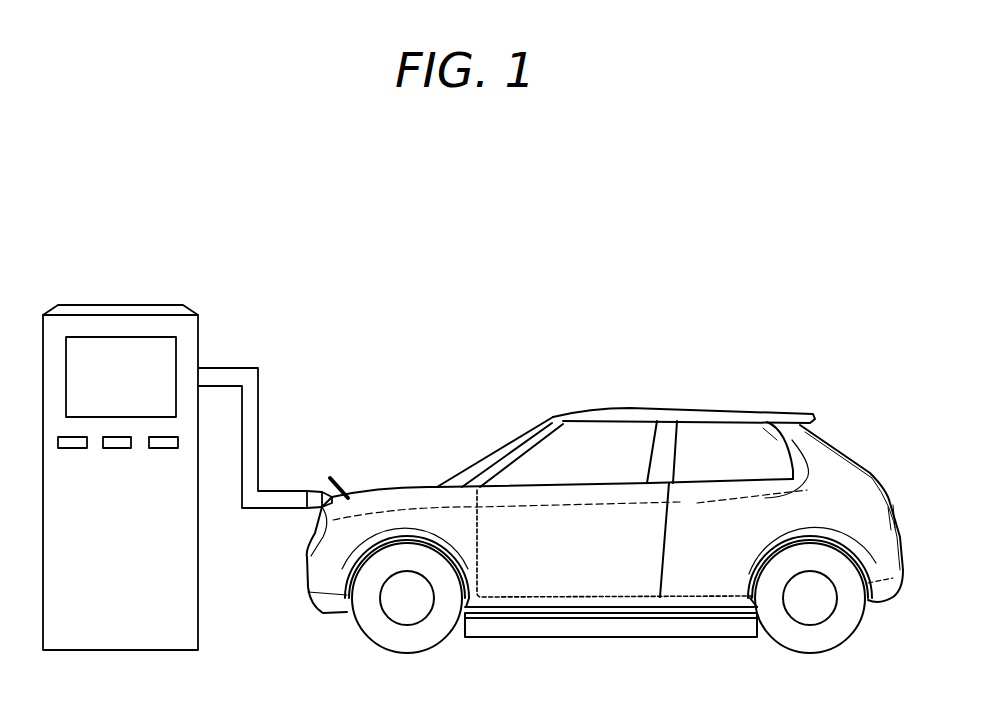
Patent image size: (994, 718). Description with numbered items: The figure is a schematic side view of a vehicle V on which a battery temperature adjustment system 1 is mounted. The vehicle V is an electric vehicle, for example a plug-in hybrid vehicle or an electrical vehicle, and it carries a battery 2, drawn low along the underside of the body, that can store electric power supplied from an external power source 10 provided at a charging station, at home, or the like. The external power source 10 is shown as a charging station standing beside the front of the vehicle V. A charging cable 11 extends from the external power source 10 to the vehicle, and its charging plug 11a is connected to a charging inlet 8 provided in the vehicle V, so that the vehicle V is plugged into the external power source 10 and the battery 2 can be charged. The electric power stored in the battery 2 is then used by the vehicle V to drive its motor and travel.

The battery temperature adjustment system 1 is at (611, 665).
The battery 2 is at (612, 625).
The charging inlet 8 is at (352, 498).
The external power source 10 is at (198, 330).
The charging cable 11 is at (243, 377).
The charging plug 11a is at (328, 500).
The vehicle V is at (605, 520).